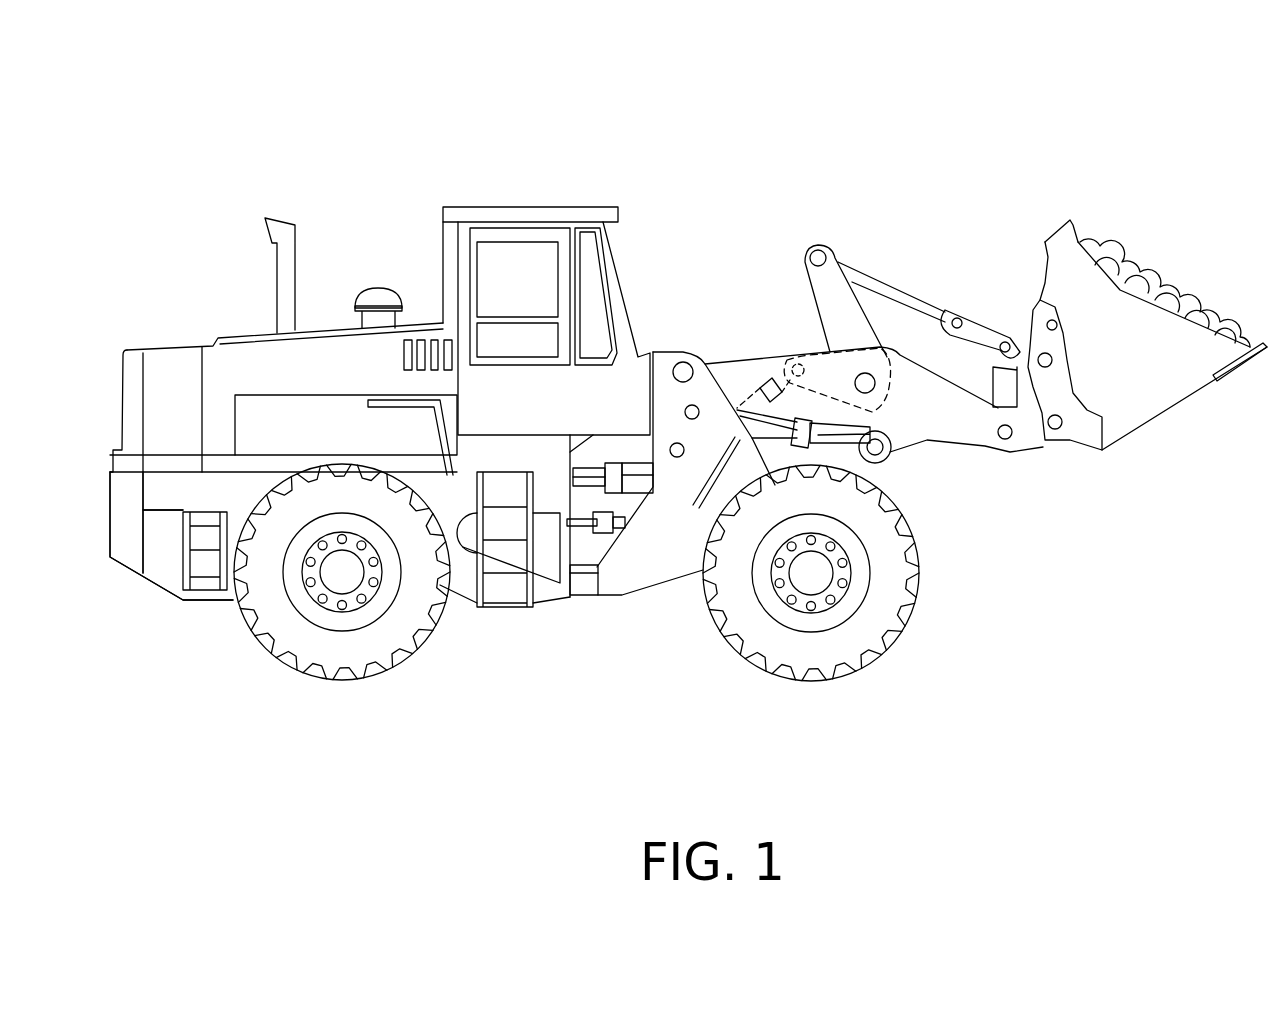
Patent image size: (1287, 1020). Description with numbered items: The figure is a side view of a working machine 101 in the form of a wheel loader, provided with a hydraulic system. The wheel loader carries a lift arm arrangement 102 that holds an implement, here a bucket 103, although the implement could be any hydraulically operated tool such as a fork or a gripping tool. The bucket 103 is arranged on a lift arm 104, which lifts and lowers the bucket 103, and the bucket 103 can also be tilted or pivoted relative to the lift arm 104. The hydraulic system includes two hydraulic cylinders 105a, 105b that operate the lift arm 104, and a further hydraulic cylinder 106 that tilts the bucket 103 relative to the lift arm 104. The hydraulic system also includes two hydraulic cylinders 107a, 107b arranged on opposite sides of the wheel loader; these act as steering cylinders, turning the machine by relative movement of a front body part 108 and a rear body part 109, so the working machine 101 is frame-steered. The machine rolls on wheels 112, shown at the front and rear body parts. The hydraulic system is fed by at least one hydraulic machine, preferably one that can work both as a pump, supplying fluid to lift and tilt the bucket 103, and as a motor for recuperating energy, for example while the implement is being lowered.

The working machine 101 is at (463, 95).
The lift arm arrangement 102 is at (948, 195).
The bucket 103 is at (1133, 390).
The lift arm 104 is at (965, 435).
The hydraulic cylinder 105a is at (941, 493).
The hydraulic cylinder 105b is at (860, 455).
The hydraulic cylinder 106 is at (762, 380).
The hydraulic cylinder 107a is at (632, 598).
The hydraulic cylinder 107b is at (680, 578).
The front body part 108 is at (637, 566).
The rear body part 109 is at (167, 565).
The wheels 112 is at (283, 630).